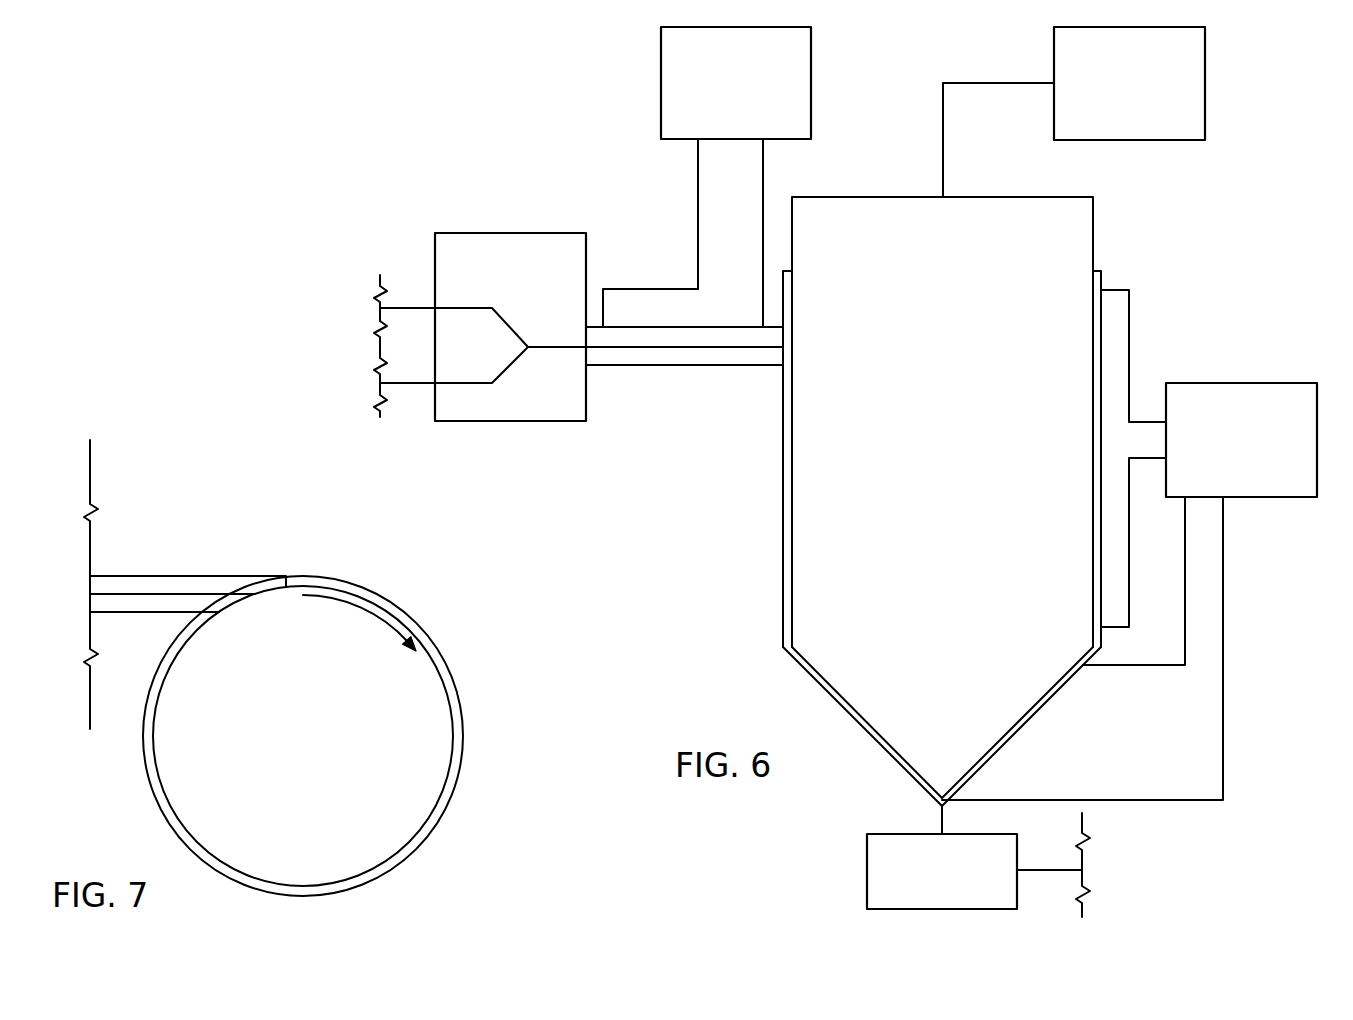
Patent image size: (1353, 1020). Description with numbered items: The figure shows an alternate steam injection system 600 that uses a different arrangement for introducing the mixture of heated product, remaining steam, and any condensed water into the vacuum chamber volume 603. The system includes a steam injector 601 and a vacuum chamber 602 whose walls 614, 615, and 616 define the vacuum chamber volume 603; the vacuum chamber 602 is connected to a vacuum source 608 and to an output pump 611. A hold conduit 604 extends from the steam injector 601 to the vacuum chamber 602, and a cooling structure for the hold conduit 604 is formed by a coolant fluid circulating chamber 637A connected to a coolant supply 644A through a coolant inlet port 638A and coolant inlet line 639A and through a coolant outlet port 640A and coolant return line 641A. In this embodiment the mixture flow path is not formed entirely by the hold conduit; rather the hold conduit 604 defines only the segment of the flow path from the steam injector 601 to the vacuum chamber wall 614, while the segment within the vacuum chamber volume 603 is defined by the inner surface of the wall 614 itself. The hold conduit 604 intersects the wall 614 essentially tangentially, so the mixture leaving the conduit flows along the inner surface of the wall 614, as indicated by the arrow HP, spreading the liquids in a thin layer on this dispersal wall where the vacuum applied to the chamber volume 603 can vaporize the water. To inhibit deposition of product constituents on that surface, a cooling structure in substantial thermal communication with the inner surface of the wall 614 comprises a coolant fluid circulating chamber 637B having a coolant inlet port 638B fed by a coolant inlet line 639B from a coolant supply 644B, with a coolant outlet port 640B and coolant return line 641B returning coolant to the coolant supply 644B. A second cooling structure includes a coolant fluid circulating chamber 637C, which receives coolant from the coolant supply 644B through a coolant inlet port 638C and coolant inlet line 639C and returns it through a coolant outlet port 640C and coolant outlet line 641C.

In FIG. 6, the steam injection system 600 is at (562, 132).
In FIG. 6, the steam injector 601 is at (483, 423).
In FIG. 6, the vacuum chamber 602 is at (961, 501).
In FIG. 6, the vacuum chamber volume 603 is at (972, 272).
In FIG. 7, the vacuum chamber volume 603 is at (325, 751).
In FIG. 6, the hold conduit 604 is at (707, 348).
In FIG. 7, the hold conduit 604 is at (120, 594).
In FIG. 6, the vacuum source 608 is at (1108, 126).
In FIG. 6, the output pump 611 is at (865, 853).
In FIG. 6, the vacuum chamber wall 614 is at (793, 448).
In FIG. 7, the vacuum chamber wall 614 is at (313, 582).
In FIG. 6, the vacuum chamber wall 615 is at (960, 195).
In FIG. 6, the vacuum chamber wall 616 is at (873, 723).
In FIG. 6, the coolant fluid circulating chamber 637A is at (633, 353).
In FIG. 7, the coolant fluid circulating chamber 637A is at (224, 587).
In FIG. 6, the coolant fluid circulating chamber 637B is at (786, 528).
In FIG. 7, the coolant fluid circulating chamber 637B is at (390, 606).
In FIG. 6, the coolant fluid circulating chamber 637C is at (890, 757).
In FIG. 6, the coolant inlet port 638A is at (606, 327).
In FIG. 6, the coolant inlet port 638B is at (1103, 630).
In FIG. 6, the coolant inlet port 638C is at (946, 803).
In FIG. 6, the coolant inlet line 639A is at (697, 181).
In FIG. 6, the coolant inlet line 639B is at (1130, 551).
In FIG. 6, the coolant inlet line 639C is at (1158, 804).
In FIG. 6, the coolant outlet port 640A is at (763, 322).
In FIG. 6, the coolant outlet port 640B is at (1103, 288).
In FIG. 6, the coolant outlet port 640C is at (1086, 667).
In FIG. 6, the coolant return line 641A is at (765, 163).
In FIG. 6, the coolant return line 641B is at (1132, 336).
In FIG. 6, the coolant outlet line 641C is at (1173, 667).
In FIG. 6, the coolant supply 644A is at (708, 126).
In FIG. 6, the coolant supply 644B is at (1270, 482).